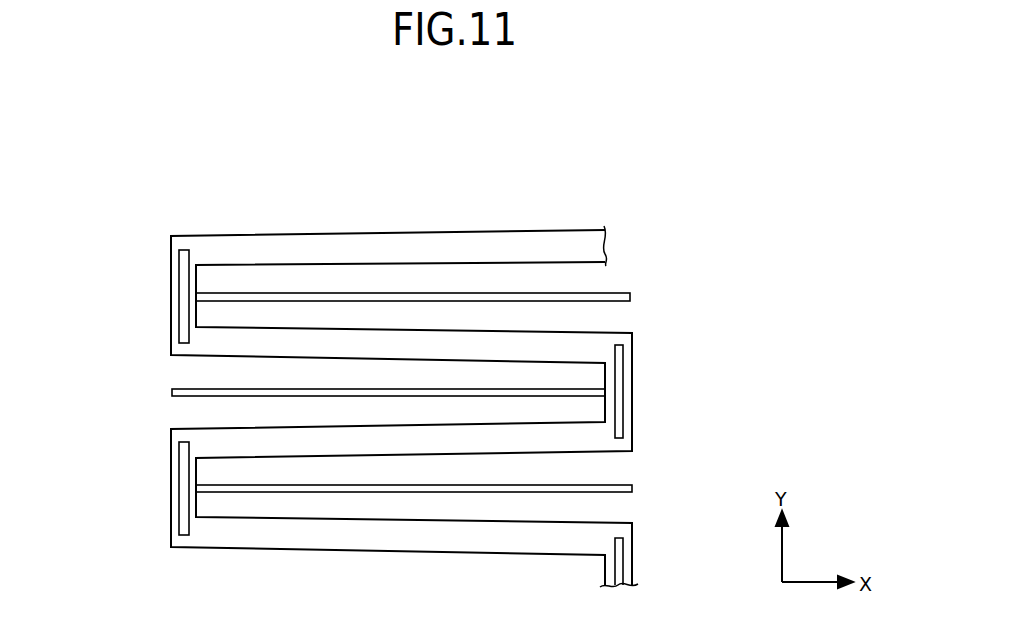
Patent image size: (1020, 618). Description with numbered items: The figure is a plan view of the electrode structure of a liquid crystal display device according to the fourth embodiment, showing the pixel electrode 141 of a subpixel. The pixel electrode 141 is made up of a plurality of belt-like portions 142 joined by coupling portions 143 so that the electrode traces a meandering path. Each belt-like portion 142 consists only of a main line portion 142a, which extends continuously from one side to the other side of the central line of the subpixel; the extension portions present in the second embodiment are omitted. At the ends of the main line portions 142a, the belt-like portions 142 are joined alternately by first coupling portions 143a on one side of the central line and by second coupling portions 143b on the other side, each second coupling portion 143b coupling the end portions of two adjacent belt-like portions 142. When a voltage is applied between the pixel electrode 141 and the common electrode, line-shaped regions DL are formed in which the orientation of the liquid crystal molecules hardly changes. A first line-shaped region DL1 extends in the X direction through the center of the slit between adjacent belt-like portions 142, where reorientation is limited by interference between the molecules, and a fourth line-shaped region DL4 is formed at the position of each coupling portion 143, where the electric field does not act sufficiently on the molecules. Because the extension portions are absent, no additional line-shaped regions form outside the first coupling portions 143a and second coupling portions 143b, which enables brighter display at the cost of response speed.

The pixel electrode 141 is at (676, 164).
The belt-like portion 142 is at (404, 381).
The main line portion 142a is at (545, 244).
The coupling portion 143 is at (399, 415).
The first coupling portion 143a is at (620, 345).
The second coupling portion 143b is at (180, 252).
The line-shaped region DL is at (402, 414).
The first line-shaped region DL1 is at (631, 297).
The fourth line-shaped region DL4 is at (192, 296).